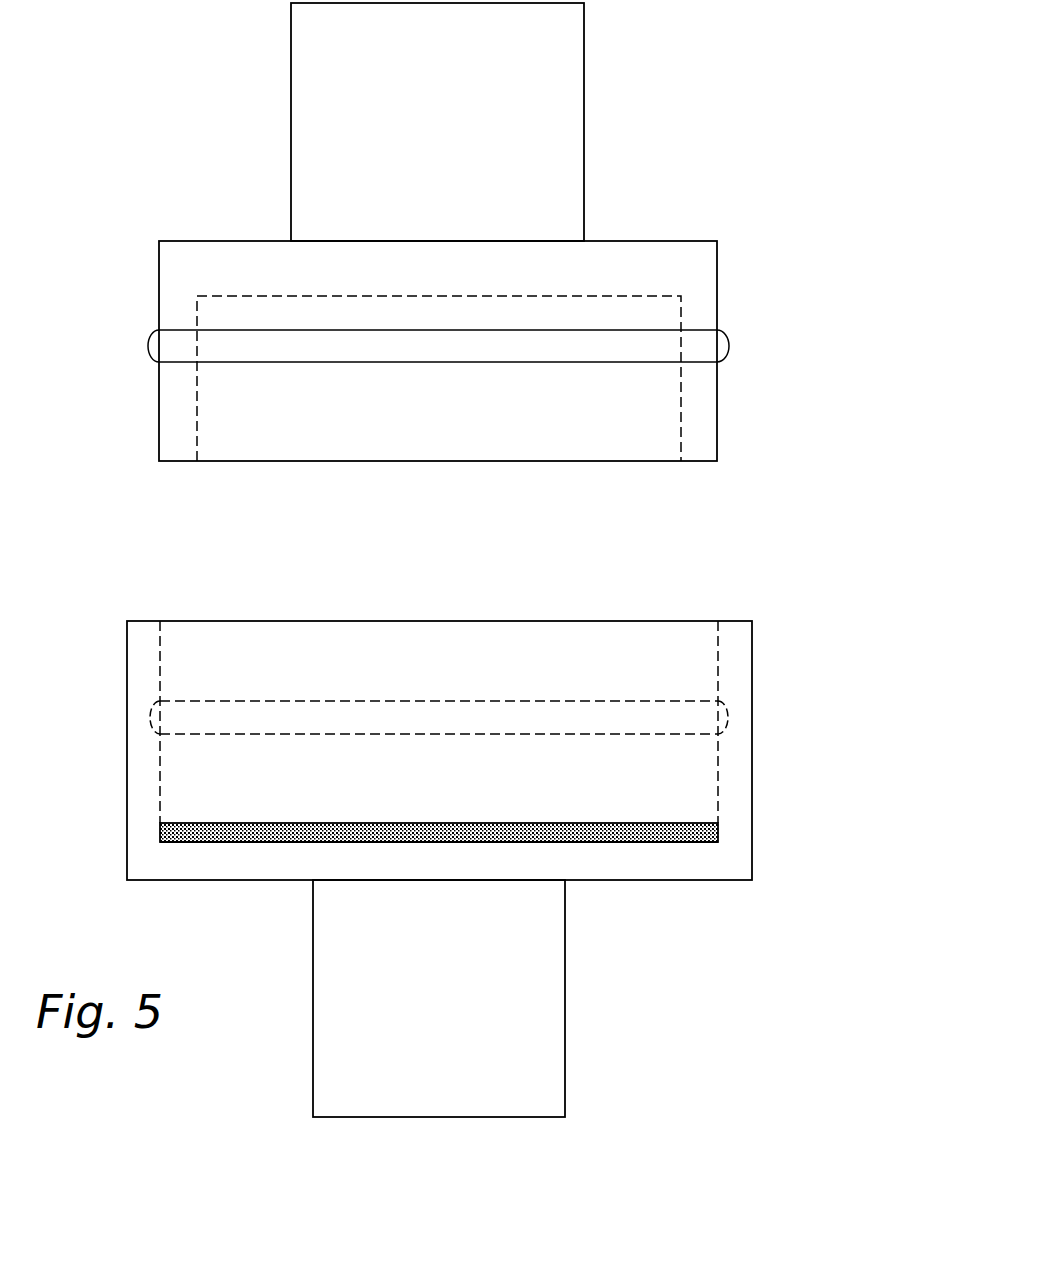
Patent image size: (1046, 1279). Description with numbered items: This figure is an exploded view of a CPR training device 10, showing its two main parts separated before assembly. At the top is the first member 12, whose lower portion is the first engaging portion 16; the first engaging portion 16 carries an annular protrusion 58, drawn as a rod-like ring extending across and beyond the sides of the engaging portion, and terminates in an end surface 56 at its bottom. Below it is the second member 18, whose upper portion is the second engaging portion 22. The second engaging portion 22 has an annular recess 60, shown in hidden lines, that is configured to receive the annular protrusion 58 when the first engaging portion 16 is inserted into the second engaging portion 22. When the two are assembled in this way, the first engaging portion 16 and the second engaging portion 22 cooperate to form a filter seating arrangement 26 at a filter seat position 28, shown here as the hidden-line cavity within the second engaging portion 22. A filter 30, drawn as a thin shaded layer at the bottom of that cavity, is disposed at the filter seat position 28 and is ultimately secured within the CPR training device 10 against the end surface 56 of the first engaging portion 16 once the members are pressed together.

The CPR training device 10 is at (826, 88).
The first member 12 is at (660, 152).
The first engaging portion 16 is at (705, 422).
The second member 18 is at (859, 813).
The second engaging portion 22 is at (738, 797).
The filter seating arrangement 26 is at (140, 821).
The filter seat position 28 is at (165, 832).
The filter 30 is at (712, 832).
The end surface 56 is at (697, 462).
The annular protrusion 58 is at (693, 342).
The annular recess 60 is at (685, 718).